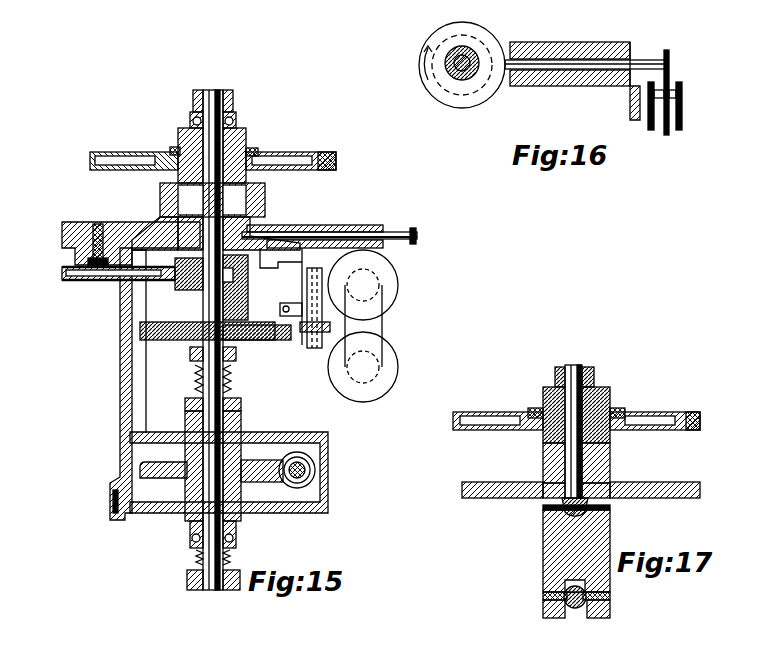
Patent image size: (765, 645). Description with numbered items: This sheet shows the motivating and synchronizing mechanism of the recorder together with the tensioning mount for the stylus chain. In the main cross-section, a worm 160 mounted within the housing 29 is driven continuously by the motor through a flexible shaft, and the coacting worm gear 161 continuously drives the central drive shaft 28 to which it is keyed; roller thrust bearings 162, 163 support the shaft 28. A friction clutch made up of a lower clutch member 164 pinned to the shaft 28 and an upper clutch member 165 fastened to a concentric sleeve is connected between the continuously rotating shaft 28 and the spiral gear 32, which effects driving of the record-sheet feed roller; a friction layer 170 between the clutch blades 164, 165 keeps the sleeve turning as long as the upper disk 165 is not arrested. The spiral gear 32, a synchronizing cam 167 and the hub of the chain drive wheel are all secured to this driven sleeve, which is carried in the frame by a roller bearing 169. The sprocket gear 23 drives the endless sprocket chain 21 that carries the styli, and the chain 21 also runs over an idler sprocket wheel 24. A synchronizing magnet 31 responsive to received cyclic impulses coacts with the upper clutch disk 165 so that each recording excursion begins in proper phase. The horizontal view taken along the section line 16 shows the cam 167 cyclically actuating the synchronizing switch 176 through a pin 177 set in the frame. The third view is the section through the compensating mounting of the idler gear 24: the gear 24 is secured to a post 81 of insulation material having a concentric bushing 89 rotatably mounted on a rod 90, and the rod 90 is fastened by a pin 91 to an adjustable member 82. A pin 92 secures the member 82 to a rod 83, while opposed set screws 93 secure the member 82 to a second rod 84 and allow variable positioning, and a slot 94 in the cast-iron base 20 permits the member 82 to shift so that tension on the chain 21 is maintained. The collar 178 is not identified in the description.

In FIG. 15, the drive shaft 28 is at (213, 92).
In FIG. 16, the drive shaft 28 is at (465, 50).
In FIG. 15, the roller thrust bearing 163 is at (235, 120).
In FIG. 15, the worm 160 is at (246, 140).
In FIG. 16, the worm 160 is at (478, 55).
In FIG. 15, the bar 178 is at (178, 150).
In FIG. 15, the sprocket gear 23 is at (300, 152).
In FIG. 15, the sprocket chain 21 is at (336, 158).
In FIG. 17, the sprocket chain 21 is at (700, 418).
In FIG. 15, the roller bearing 169 is at (160, 192).
In FIG. 15, the synchronizing cam 167 is at (262, 228).
In FIG. 16, the synchronizing cam 167 is at (482, 98).
In FIG. 15, the friction layer 170 is at (140, 331).
In FIG. 15, the section line 16 is at (160, 236).
In FIG. 15, the spiral gear 32 is at (180, 282).
In FIG. 15, the pin 177 is at (385, 233).
In FIG. 16, the pin 177 is at (640, 60).
In FIG. 15, the synchronizing switch 176 is at (416, 244).
In FIG. 16, the synchronizing switch 176 is at (682, 114).
In FIG. 15, the clutch member 165 is at (248, 325).
In FIG. 15, the clutch member 164 is at (262, 340).
In FIG. 15, the synchronizing magnet 31 is at (398, 350).
In FIG. 15, the housing 29 is at (328, 472).
In FIG. 15, the worm gear 161 is at (258, 460).
In FIG. 15, the roller thrust bearing 162 is at (237, 538).
In FIG. 15, the base 20 is at (425, 640).
In FIG. 17, the base 20 is at (675, 486).
In FIG. 17, the rod 90 is at (575, 368).
In FIG. 17, the post 81 is at (548, 392).
In FIG. 17, the bushing 89 is at (600, 393).
In FIG. 17, the idler sprocket wheel 24 is at (655, 418).
In FIG. 17, the slot 94 is at (543, 486).
In FIG. 17, the pin 91 is at (600, 466).
In FIG. 17, the pin 92 is at (543, 508).
In FIG. 17, the rod 83 is at (565, 512).
In FIG. 17, the adjustable member 82 is at (548, 550).
In FIG. 17, the set screws 93 is at (543, 597).
In FIG. 17, the rod 84 is at (574, 608).